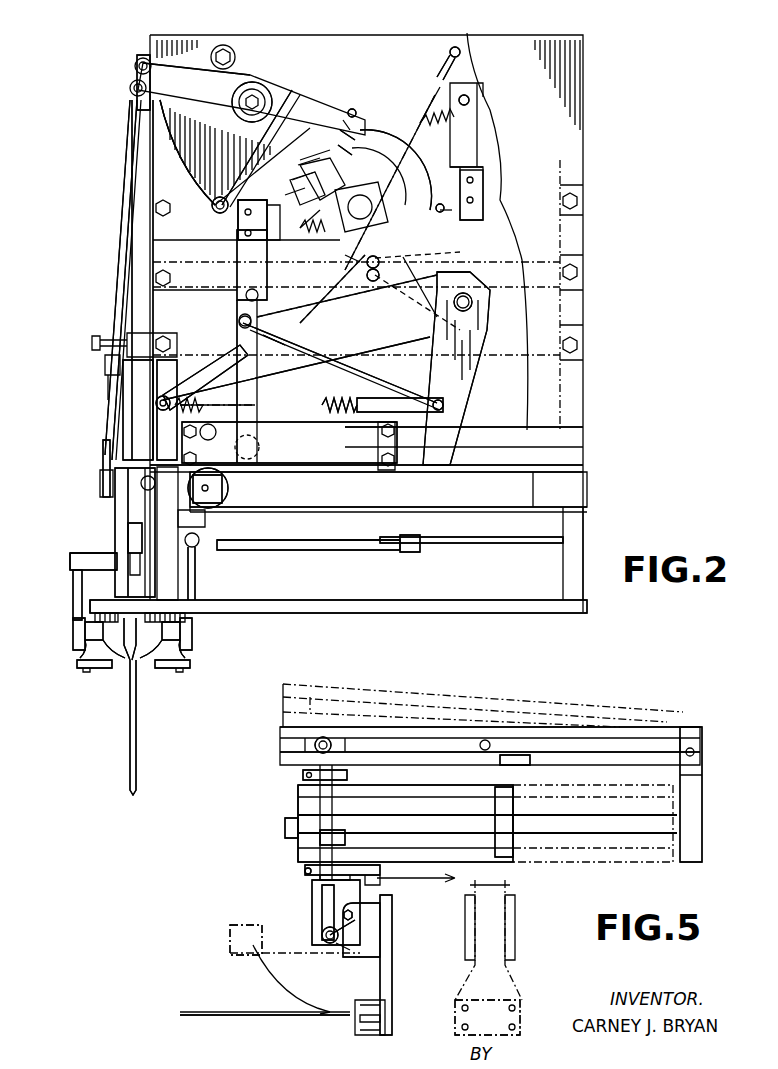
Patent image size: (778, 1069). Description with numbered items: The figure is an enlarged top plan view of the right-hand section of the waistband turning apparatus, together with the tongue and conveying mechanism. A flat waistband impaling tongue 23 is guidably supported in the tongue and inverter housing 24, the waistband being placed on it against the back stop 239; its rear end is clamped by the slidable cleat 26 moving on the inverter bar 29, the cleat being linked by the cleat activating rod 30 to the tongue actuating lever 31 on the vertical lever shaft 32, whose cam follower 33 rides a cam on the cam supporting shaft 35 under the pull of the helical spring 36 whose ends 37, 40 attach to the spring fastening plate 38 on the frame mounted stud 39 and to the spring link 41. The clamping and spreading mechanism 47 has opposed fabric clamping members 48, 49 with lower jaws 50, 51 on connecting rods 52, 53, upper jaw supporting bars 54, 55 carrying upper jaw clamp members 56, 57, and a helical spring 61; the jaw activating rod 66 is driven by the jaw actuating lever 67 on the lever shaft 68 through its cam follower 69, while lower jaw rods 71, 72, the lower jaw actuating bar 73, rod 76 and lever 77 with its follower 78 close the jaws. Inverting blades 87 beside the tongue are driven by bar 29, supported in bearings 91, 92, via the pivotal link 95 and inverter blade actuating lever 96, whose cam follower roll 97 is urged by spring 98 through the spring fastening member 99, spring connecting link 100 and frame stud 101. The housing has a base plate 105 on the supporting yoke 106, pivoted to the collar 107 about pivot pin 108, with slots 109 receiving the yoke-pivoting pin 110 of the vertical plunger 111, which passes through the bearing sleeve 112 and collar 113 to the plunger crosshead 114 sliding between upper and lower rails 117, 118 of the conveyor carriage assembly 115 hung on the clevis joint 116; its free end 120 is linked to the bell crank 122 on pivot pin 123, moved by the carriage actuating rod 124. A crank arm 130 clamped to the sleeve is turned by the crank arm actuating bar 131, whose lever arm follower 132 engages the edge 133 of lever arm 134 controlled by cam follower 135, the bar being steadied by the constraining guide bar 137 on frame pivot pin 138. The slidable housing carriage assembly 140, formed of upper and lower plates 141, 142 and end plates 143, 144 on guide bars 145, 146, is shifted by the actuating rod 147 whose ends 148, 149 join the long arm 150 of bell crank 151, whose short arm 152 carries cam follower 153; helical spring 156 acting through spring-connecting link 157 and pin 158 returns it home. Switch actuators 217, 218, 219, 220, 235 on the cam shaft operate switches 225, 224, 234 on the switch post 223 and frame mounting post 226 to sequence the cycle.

In FIG. 2, the waistband impaling tongue 23 is at (137, 752).
In FIG. 5, the waistband impaling tongue 23 is at (215, 1015).
In FIG. 2, the tongue and inverter housing 24 is at (125, 500).
In FIG. 5, the tongue and inverter housing 24 is at (230, 940).
In FIG. 2, the slidable cleat 26 is at (118, 418).
In FIG. 2, the inverter bar (blade actuating bar) 29 is at (140, 290).
In FIG. 2, the cleat activating rod 30 is at (120, 408).
In FIG. 2, the tongue actuating lever 31 is at (300, 368).
In FIG. 2, the vertical lever shaft 32 is at (472, 310).
In FIG. 2, the cam follower 33 is at (375, 322).
In FIG. 2, the cam supporting shaft 35 is at (368, 205).
In FIG. 2, the helical spring 36 is at (432, 100).
In FIG. 2, the spring end 37 is at (440, 72).
In FIG. 2, the spring fastening plate 38 is at (443, 70).
In FIG. 2, the frame mounted stud 39 is at (455, 45).
In FIG. 2, the spring end 40 is at (379, 262).
In FIG. 2, the spring link 41 is at (380, 275).
In FIG. 2, the waistband clamping and spreading mechanism 47 is at (70, 545).
In FIG. 2, the fabric clamping member 48 is at (95, 640).
In FIG. 2, the fabric clamping member 49 is at (185, 638).
In FIG. 2, the lower jaw 50 is at (112, 672).
In FIG. 2, the lower jaw 51 is at (160, 672).
In FIG. 2, the lower jaw connecting rod 52 is at (78, 638).
In FIG. 2, the lower jaw connecting rod 53 is at (185, 648).
In FIG. 2, the upper jaw supporting bar 54 is at (185, 660).
In FIG. 2, the upper jaw supporting bar 55 is at (80, 663).
In FIG. 2, the upper jaw clamp member 56 is at (95, 672).
In FIG. 2, the upper jaw clamp member 57 is at (178, 672).
In FIG. 2, the helical spring 61 is at (90, 608).
In FIG. 2, the jaw activating rod 66 is at (120, 555).
In FIG. 2, the jaw actuating lever 67 is at (283, 130).
In FIG. 2, the lever shaft 68 is at (252, 102).
In FIG. 2, the cam follower 69 is at (235, 220).
In FIG. 2, the lower jaw connecting rod 71 is at (75, 595).
In FIG. 2, the lower jaw connecting rod 72 is at (196, 596).
In FIG. 2, the lower jaw actuating bar 73 is at (95, 555).
In FIG. 2, the lower jaw actuating rod 76 is at (130, 540).
In FIG. 2, the lower jaw actuating rod lever 77 is at (225, 150).
In FIG. 2, the pivot 78 is at (213, 202).
In FIG. 2, the inverting blade 87 is at (132, 660).
In FIG. 2, the bearing 91 is at (132, 195).
In FIG. 2, the bearing 92 is at (108, 466).
In FIG. 2, the pivotal link 95 is at (138, 118).
In FIG. 2, the inverter blade actuating lever 96 is at (160, 68).
In FIG. 2, the cam follower roll 97 is at (352, 109).
In FIG. 2, the helical spring 98 is at (345, 147).
In FIG. 2, the spring fastening member 99 is at (347, 133).
In FIG. 2, the spring connecting link 100 is at (305, 225).
In FIG. 2, the machine frame stud 101 is at (272, 340).
In FIG. 5, the base plate 105 is at (393, 978).
In FIG. 5, the supporting yoke 106 is at (375, 935).
In FIG. 5, the collar 107 is at (320, 890).
In FIG. 5, the pivot pin 108 is at (352, 918).
In FIG. 5, the pivot-pin-receiving slot 109 is at (345, 945).
In FIG. 2, the yoke-pivoting pin 110 is at (222, 95).
In FIG. 5, the yoke-pivoting pin 110 is at (325, 950).
In FIG. 5, the vertical plunger 111 is at (325, 905).
In FIG. 5, the bearing sleeve 112 is at (340, 842).
In FIG. 5, the collar 113 is at (350, 775).
In FIG. 2, the plunger crosshead 114 is at (200, 545).
In FIG. 5, the plunger crosshead 114 is at (335, 745).
In FIG. 5, the housing conveyor carriage assembly 115 is at (556, 722).
In FIG. 5, the clevis joint 116 is at (700, 752).
In FIG. 2, the upper rail 117 is at (305, 468).
In FIG. 5, the upper rail 117 is at (452, 730).
In FIG. 5, the lower rail 118 is at (515, 760).
In FIG. 2, the free end 120 is at (222, 490).
In FIG. 2, the bell crank 122 is at (118, 480).
In FIG. 2, the bell crank pivot pin 123 is at (238, 310).
In FIG. 2, the carriage actuating rod 124 is at (118, 262).
In FIG. 2, the crank arm 130 is at (263, 435).
In FIG. 2, the crank arm actuating bar 131 is at (245, 407).
In FIG. 5, the crank arm actuating bar 131 is at (305, 871).
In FIG. 2, the lever arm follower 132 is at (240, 322).
In FIG. 2, the lever arm edge 133 is at (330, 315).
In FIG. 2, the lever arm 134 is at (390, 378).
In FIG. 2, the lever arm actuating cam follower 135 is at (350, 255).
In FIG. 2, the constraining guide bar 137 is at (240, 390).
In FIG. 2, the machine frame pivot pin 138 is at (228, 478).
In FIG. 5, the slidable housing carriage assembly 140 is at (292, 812).
In FIG. 5, the upper plate 141 is at (440, 780).
In FIG. 5, the lower plate 142 is at (445, 866).
In FIG. 5, the end plate 143 is at (510, 806).
In FIG. 2, the end plate 144 is at (172, 393).
In FIG. 5, the end plate 144 is at (300, 840).
In FIG. 2, the guide bar 145 is at (510, 430).
In FIG. 2, the guide bar 146 is at (540, 540).
In FIG. 5, the guide bar 146 is at (640, 840).
In FIG. 2, the actuating rod 147 is at (355, 550).
In FIG. 2, the rod end 148 is at (237, 548).
In FIG. 2, the rod end 149 is at (430, 548).
In FIG. 2, the long arm 150 is at (435, 498).
In FIG. 2, the bell crank 151 is at (470, 390).
In FIG. 2, the short arm 152 is at (440, 272).
In FIG. 2, the cam follower 153 is at (385, 245).
In FIG. 2, the helical spring 156 is at (330, 400).
In FIG. 2, the spring-connecting link 157 is at (400, 402).
In FIG. 2, the pin 158 is at (445, 408).
In FIG. 2, the switch actuator 217 is at (290, 196).
In FIG. 2, the switch actuator 218 is at (295, 183).
In FIG. 2, the switch actuator 219 is at (300, 170).
In FIG. 2, the arcuate switch actuator 220 is at (440, 215).
In FIG. 2, the switch post 223 is at (240, 285).
In FIG. 2, the switch 224 is at (478, 195).
In FIG. 2, the switch 225 is at (455, 175).
In FIG. 2, the frame mounting post 226 is at (469, 100).
In FIG. 2, the switch 234 is at (238, 232).
In FIG. 2, the switch actuator 235 is at (320, 157).
In FIG. 2, the back stop 239 is at (230, 608).